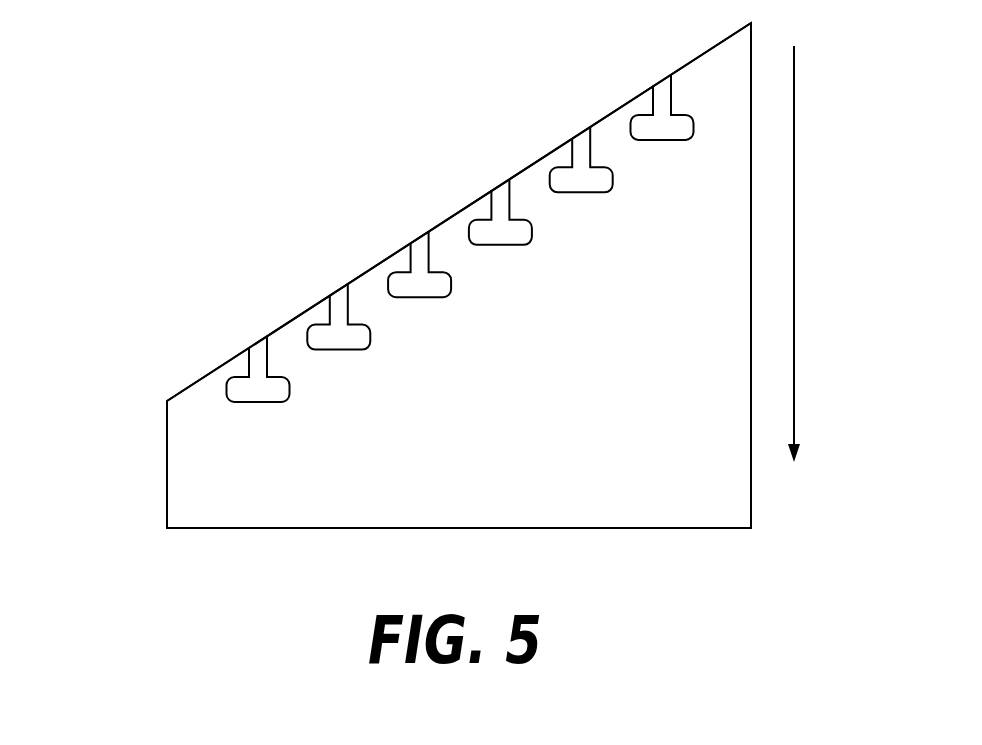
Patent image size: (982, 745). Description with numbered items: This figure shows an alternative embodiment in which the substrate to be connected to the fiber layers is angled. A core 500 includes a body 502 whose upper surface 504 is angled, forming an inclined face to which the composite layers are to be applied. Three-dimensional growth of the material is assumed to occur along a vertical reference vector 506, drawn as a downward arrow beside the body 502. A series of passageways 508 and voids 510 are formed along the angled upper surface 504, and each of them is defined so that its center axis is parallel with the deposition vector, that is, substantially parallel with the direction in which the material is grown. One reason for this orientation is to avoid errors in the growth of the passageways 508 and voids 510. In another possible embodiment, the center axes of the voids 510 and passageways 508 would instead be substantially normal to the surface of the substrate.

The core 500 is at (262, 197).
The body 502 is at (692, 482).
The upper surface 504 is at (217, 370).
The vertical reference vector 506 is at (795, 282).
The passageways 508 is at (268, 358).
The voids 510 is at (528, 228).